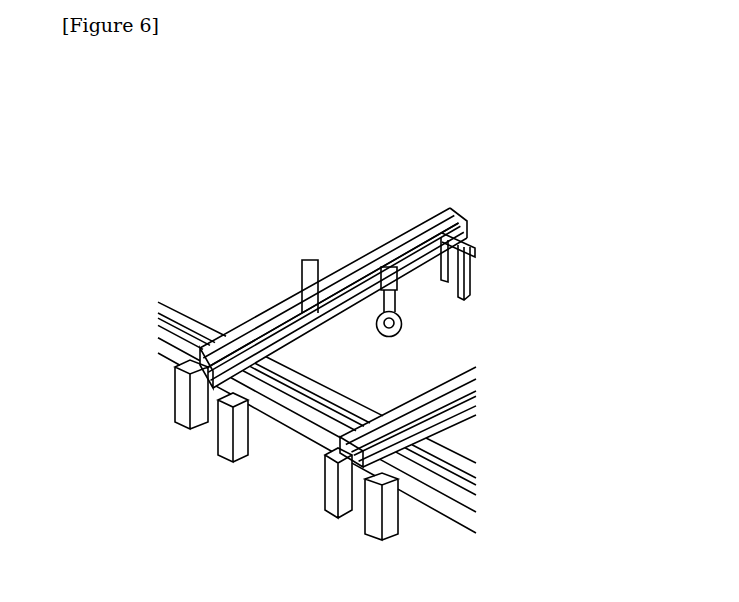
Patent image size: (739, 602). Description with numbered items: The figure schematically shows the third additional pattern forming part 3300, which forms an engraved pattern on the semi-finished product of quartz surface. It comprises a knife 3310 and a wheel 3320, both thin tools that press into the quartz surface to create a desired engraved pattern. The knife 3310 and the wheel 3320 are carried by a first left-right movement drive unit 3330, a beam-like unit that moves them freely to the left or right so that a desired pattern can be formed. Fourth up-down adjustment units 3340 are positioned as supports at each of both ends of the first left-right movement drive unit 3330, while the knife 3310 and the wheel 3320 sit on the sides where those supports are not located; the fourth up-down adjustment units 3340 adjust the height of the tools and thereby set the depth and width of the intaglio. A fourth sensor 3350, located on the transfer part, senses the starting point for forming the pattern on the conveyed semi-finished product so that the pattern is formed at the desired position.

The third additional pattern forming part 3300 is at (330, 157).
The knife 3310 is at (313, 264).
The wheel 3320 is at (400, 308).
The first left-right movement drive unit 3330 is at (278, 325).
The fourth up-down adjustment unit 3340 is at (190, 412).
The fourth sensor 3350 is at (376, 404).